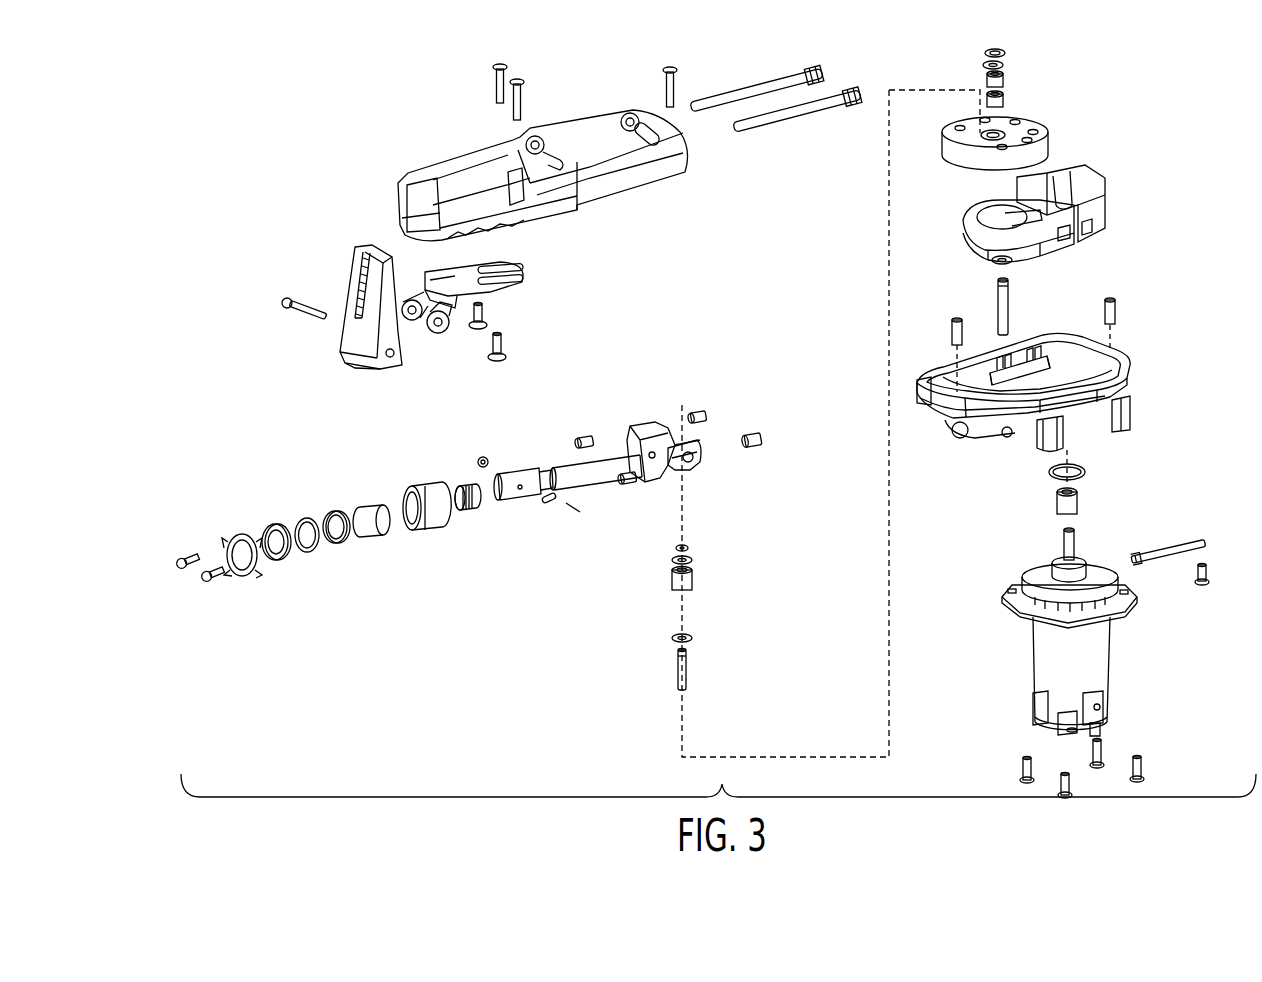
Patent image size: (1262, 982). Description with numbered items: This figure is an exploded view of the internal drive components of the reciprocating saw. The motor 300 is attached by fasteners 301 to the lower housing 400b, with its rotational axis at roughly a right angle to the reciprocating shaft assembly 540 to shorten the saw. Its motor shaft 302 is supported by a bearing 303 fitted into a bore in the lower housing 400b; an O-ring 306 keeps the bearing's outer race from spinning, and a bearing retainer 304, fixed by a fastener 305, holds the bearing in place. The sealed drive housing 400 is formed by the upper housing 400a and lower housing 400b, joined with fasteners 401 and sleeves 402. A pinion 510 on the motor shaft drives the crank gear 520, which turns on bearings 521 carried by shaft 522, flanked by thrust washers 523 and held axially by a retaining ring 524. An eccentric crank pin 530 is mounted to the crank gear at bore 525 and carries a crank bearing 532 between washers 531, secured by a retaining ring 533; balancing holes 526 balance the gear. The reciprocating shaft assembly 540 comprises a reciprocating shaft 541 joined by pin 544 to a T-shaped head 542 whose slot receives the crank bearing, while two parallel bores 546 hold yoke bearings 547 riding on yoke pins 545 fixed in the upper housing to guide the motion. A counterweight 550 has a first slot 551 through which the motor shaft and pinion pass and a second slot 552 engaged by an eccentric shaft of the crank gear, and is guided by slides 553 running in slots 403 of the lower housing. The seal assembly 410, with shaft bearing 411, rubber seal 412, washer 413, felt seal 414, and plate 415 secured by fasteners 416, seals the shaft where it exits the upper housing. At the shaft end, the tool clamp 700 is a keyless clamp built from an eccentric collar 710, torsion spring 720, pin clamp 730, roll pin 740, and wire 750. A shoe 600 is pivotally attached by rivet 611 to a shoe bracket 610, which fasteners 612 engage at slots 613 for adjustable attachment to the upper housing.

The motor 300 is at (1101, 658).
The fasteners 301 is at (1143, 765).
The motor shaft 302 is at (1077, 544).
The bearing 303 is at (1084, 566).
The bearing retainer 304 is at (1178, 548).
The fastener 305 is at (1210, 568).
The O-ring 306 is at (1086, 468).
The drive housing 400 is at (807, 253).
The upper housing 400a is at (447, 167).
The lower housing 400b is at (1128, 392).
The fasteners 401 is at (664, 84).
The sleeves 402 is at (952, 333).
The slots 403 is at (1045, 352).
The seal assembly 410 is at (276, 564).
The shaft bearing 411 is at (368, 505).
The rubber seal 412 is at (334, 510).
The washer 413 is at (305, 518).
The felt seal 414 is at (272, 524).
The plate 415 is at (238, 534).
The fasteners 416 is at (186, 551).
The pinion 510 is at (1079, 501).
The crank gear 520 is at (1010, 129).
The bearings 521 is at (1007, 100).
The shaft 522 is at (1010, 308).
The thrust washers 523 is at (1004, 65).
The retaining ring 524 is at (984, 55).
The bore 525 is at (980, 134).
The balancing holes 526 is at (1042, 124).
The eccentric crank pin 530 is at (690, 680).
The washers 531 is at (693, 561).
The crank bearing 532 is at (693, 582).
The retaining ring 533 is at (690, 549).
The reciprocating shaft assembly 540 is at (613, 445).
The reciprocating shaft 541 is at (560, 458).
The T-shaped head 542 is at (640, 425).
The pin 544 is at (652, 460).
The yoke pins 545 is at (777, 115).
The parallel bores 546 is at (695, 470).
The yoke bearings 547 is at (756, 435).
The counterweight 550 is at (1042, 206).
The first slot 551 is at (1066, 177).
The second slot 552 is at (969, 215).
The slides 553 is at (1097, 236).
The shoe 600 is at (355, 358).
The shoe bracket 610 is at (468, 326).
The rivet 611 is at (298, 315).
The fasteners 612 is at (498, 365).
The slots 613 is at (512, 282).
The tool clamp 700 is at (491, 531).
The eccentric collar 710 is at (440, 531).
The torsion spring 720 is at (473, 513).
The pin clamp 730 is at (480, 456).
The roll pin 740 is at (546, 502).
The wire 750 is at (562, 539).